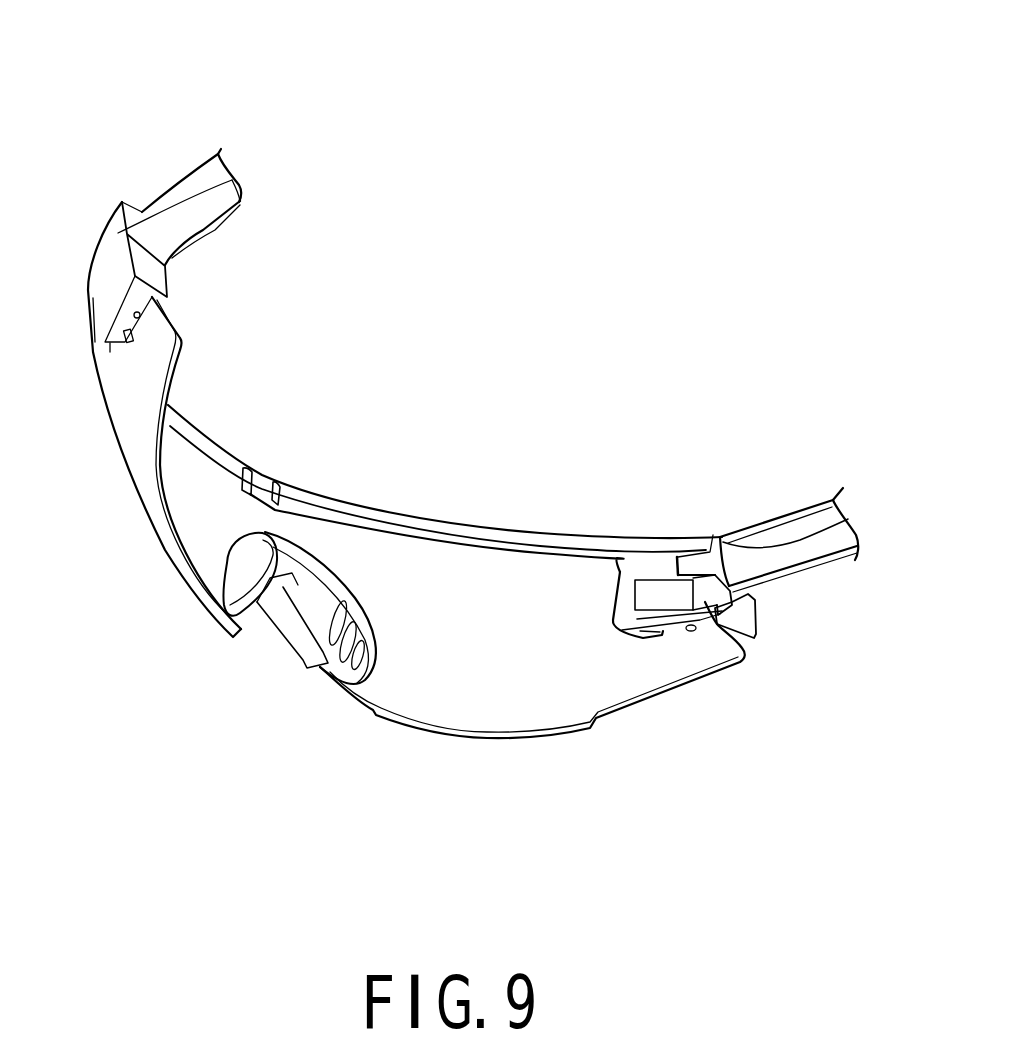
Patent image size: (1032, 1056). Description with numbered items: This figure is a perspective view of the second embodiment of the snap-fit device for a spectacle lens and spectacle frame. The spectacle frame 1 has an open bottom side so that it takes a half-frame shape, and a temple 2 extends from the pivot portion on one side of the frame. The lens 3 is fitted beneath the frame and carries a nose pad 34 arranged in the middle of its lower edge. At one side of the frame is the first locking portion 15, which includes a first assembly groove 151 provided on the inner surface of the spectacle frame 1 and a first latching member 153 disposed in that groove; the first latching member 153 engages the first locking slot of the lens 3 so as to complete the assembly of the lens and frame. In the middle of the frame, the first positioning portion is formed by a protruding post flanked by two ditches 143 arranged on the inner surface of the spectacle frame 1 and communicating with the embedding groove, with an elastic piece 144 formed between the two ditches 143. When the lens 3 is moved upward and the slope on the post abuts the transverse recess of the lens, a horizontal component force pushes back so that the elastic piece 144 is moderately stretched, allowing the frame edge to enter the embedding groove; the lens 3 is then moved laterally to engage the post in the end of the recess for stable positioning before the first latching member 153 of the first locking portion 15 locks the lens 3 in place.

The spectacle frame 1 is at (393, 517).
The temple 2 is at (187, 182).
The lens 3 is at (483, 713).
The first locking portion 15 is at (675, 638).
The nose pad 34 is at (235, 597).
The ditches 143 is at (285, 487).
The elastic piece 144 is at (263, 480).
The first assembly groove 151 is at (730, 591).
The first latching member 153 is at (742, 643).